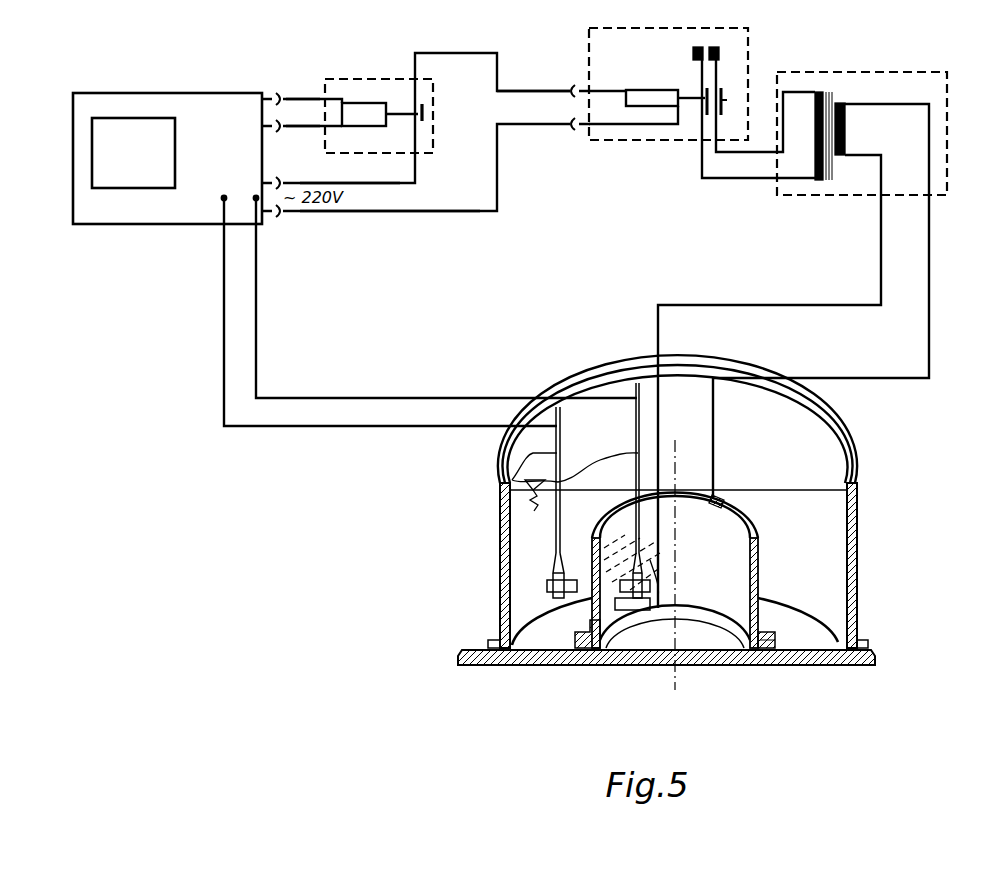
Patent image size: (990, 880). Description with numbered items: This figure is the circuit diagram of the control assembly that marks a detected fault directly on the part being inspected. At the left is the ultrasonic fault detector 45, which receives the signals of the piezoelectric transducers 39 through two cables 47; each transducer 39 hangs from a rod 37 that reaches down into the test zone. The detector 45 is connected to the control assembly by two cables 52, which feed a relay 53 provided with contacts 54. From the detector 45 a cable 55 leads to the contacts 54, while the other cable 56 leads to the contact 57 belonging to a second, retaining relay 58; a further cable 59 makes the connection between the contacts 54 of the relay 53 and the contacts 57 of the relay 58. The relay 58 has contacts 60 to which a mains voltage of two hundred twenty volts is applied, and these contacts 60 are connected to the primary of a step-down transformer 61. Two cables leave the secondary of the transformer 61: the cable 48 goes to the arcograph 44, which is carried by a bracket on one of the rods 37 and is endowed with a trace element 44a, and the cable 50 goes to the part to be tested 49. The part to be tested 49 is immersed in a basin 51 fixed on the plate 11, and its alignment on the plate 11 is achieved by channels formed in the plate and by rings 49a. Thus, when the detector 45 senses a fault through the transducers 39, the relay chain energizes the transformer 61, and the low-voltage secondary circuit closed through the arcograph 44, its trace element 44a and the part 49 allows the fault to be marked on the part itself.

The ultrasonic fault detector 45 is at (185, 105).
The cables 52 is at (310, 123).
The relay 53 is at (367, 103).
The contacts 54 is at (423, 110).
The cable 55 is at (367, 186).
The cable 56 is at (423, 212).
The contact 57 is at (572, 126).
The relay 58 is at (652, 104).
The cable 59 is at (537, 89).
The contacts 60 is at (723, 101).
The step-down transformer 61 is at (842, 88).
The cable 48 is at (880, 307).
The cable 50 is at (928, 380).
The cables 47 is at (292, 400).
The rod 37 is at (500, 483).
The piezoelectric transducer 39 is at (617, 608).
The arcograph 44 is at (583, 648).
The trace element 44a is at (590, 620).
The plate 11 is at (612, 665).
The part to be tested 49 is at (713, 605).
The rings 49a is at (778, 660).
The basin 51 is at (855, 608).